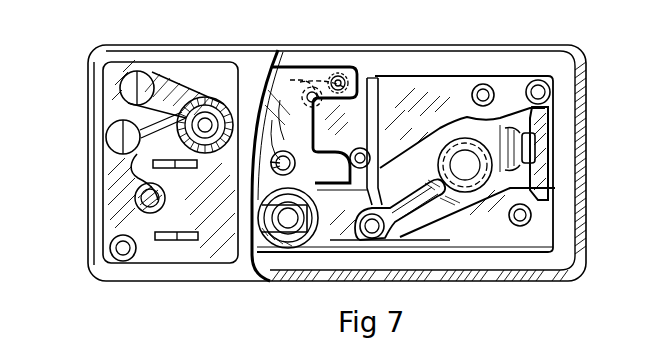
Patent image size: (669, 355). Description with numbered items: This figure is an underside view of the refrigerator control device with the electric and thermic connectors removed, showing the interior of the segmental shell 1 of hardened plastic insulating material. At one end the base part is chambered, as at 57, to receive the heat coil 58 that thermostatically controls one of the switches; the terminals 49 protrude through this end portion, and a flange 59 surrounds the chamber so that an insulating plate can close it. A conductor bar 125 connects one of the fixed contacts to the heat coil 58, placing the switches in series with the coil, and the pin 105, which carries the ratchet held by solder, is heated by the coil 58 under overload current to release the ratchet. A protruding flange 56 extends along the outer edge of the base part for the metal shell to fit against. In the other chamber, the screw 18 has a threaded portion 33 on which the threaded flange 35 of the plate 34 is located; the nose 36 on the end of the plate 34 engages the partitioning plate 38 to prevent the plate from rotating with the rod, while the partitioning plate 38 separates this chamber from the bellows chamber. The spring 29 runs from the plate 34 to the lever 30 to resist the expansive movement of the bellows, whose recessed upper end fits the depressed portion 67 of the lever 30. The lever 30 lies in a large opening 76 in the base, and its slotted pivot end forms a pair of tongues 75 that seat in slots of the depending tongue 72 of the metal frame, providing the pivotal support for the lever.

The segmental shell 1 is at (172, 54).
The protruding flange 56 is at (565, 82).
The chamber 57 is at (112, 120).
The heat coil 58 is at (205, 104).
The flange 59 is at (104, 147).
The terminals 49 is at (153, 164).
The conductor bar 125 is at (136, 197).
The pin 105 is at (225, 100).
The plate 34 is at (307, 72).
The nose 36 is at (340, 79).
The partitioning plate 38 is at (376, 92).
The threaded portion 33 is at (295, 165).
The threaded flange 35 is at (270, 162).
The screw 18 is at (273, 168).
The spring 29 is at (288, 250).
The lever 30 is at (440, 202).
The large opening 76 is at (462, 212).
The depressed portion 67 is at (467, 167).
The tongue 72 is at (535, 150).
The tongues 75 is at (540, 117).